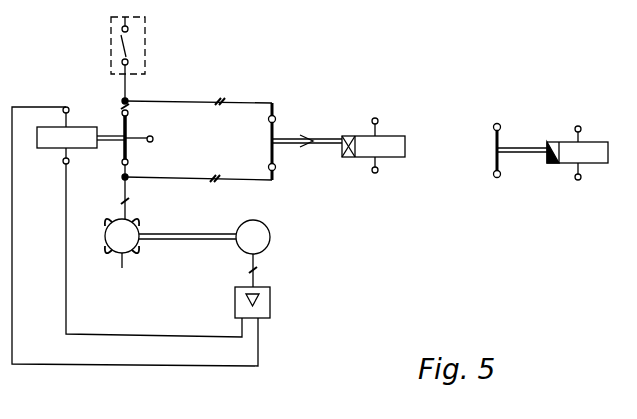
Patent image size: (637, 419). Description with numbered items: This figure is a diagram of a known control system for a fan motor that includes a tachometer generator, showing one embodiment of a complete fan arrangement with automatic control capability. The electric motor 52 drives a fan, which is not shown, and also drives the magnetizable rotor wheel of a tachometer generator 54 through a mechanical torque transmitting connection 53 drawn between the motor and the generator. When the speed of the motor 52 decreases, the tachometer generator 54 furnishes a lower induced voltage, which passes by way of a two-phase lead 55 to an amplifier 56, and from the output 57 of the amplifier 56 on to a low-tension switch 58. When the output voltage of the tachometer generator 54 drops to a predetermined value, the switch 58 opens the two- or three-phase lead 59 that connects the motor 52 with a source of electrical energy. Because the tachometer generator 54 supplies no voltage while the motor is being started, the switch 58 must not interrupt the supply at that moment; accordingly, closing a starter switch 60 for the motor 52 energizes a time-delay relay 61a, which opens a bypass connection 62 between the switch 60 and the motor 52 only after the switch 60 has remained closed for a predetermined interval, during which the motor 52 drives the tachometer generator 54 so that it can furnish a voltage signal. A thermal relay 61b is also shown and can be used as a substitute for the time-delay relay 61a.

The electric motor 52 is at (122, 255).
The mechanical torque transmitting connection 53 is at (187, 222).
The tachometer generator 54 is at (270, 233).
The two-phase lead 55 is at (258, 265).
The amplifier 56 is at (263, 309).
The output of amplifier 57 is at (135, 237).
The low-tension switch 58 is at (44, 149).
The two- or three-phase lead 59 is at (128, 84).
The starter switch 60 is at (146, 38).
The time-delay relay 61a is at (362, 135).
The thermal relay 61b is at (563, 145).
The bypass connection 62 is at (275, 106).